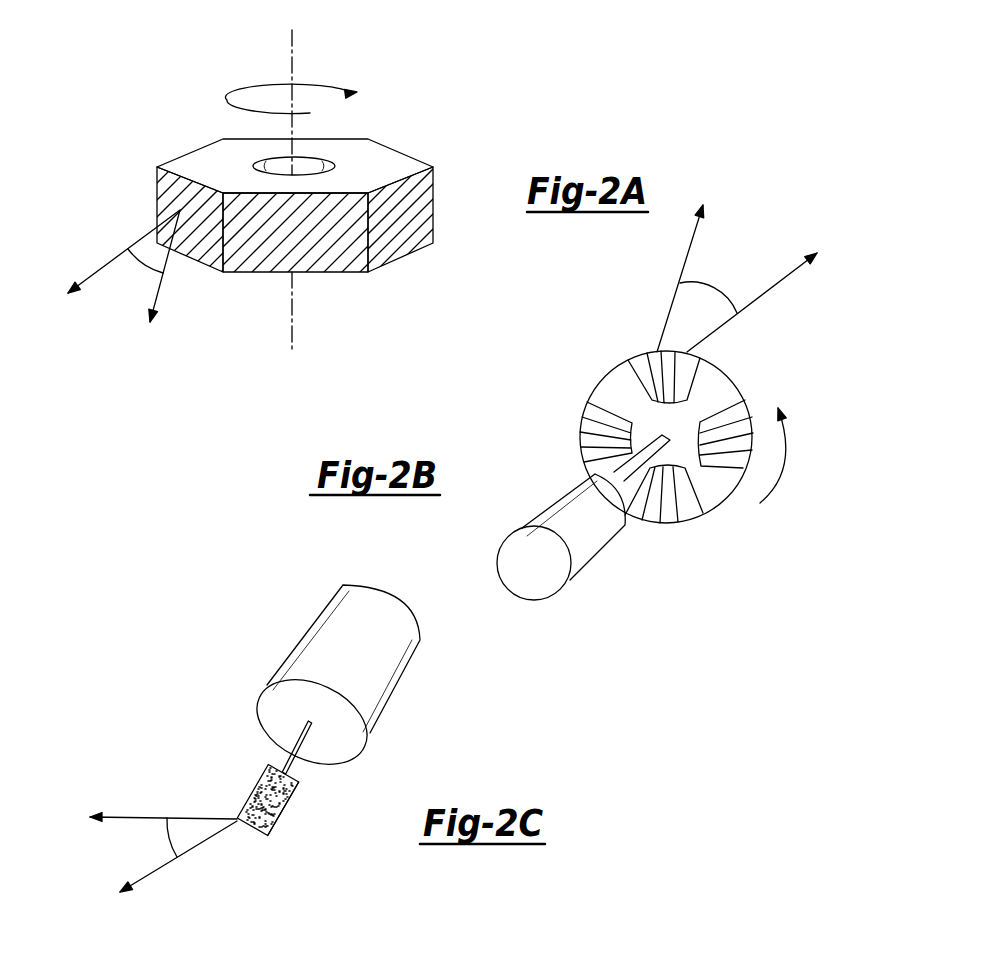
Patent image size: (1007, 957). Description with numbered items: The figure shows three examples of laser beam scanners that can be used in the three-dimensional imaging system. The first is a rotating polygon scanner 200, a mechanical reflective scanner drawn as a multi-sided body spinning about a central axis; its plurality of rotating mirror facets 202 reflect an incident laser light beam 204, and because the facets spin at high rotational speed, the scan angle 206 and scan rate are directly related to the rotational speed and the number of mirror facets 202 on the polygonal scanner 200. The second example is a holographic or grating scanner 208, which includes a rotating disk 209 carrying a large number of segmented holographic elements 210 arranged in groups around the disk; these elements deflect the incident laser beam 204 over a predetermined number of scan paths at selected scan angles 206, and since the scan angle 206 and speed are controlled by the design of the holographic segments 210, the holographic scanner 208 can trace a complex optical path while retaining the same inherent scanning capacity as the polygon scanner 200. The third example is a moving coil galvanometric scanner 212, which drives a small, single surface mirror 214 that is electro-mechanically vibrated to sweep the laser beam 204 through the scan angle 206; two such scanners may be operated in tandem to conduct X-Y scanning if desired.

In FIG. 2A, the rotating polygon scanner 200 is at (288, 191).
In FIG. 2A, the rotating mirror facets 202 is at (417, 250).
In FIG. 2A, the laser light beam 204 is at (178, 198).
In FIG. 2B, the laser light beam 204 is at (645, 384).
In FIG. 2C, the laser light beam 204 is at (277, 817).
In FIG. 2A, the scan angle 206 is at (173, 277).
In FIG. 2B, the scan angle 206 is at (782, 298).
In FIG. 2C, the scan angle 206 is at (193, 872).
In FIG. 2B, the holographic scanner 208 is at (777, 498).
In FIG. 2B, the rotating disk 209 is at (752, 415).
In FIG. 2B, the segmented holographic elements 210 is at (703, 522).
In FIG. 2C, the moving coil galvanometric scanner 212 is at (433, 673).
In FIG. 2C, the single surface mirror 214 is at (255, 787).